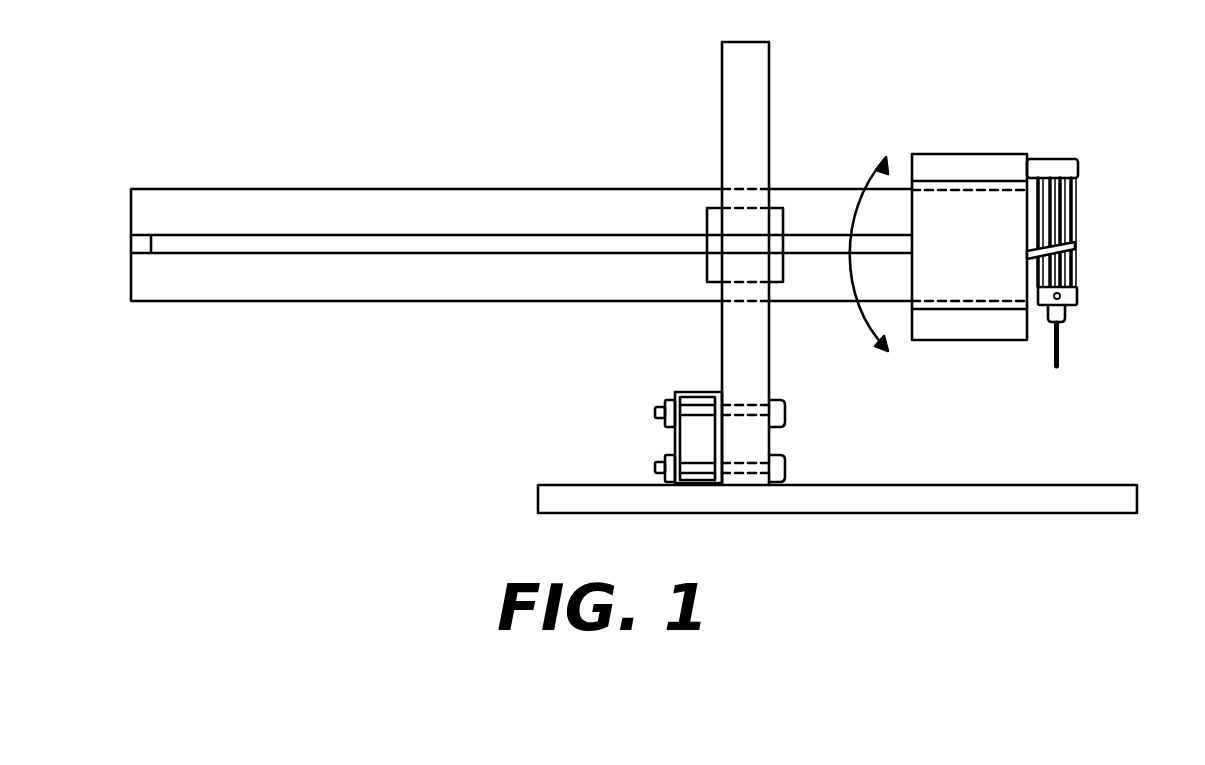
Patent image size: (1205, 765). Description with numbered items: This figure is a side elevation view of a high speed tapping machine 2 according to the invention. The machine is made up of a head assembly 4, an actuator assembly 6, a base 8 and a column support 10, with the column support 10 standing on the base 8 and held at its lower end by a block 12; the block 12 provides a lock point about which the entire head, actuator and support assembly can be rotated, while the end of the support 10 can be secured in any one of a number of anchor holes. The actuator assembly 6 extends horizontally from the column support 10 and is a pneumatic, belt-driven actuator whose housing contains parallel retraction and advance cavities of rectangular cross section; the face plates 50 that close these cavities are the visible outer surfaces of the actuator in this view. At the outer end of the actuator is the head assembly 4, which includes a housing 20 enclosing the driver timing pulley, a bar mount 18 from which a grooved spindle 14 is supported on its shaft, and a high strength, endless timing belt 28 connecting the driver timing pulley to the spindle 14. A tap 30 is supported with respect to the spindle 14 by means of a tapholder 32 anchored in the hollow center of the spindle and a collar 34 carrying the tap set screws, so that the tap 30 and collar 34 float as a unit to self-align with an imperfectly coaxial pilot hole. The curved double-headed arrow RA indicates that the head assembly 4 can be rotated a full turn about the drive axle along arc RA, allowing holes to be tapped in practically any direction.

The high speed tapping machine 2 is at (248, 413).
The head assembly 4 is at (1092, 138).
The actuator assembly 6 is at (579, 213).
The base 8 is at (1130, 497).
The column support 10 is at (760, 52).
The block 12 is at (677, 392).
The spindle 14 is at (1078, 215).
The bar mount 18 is at (1078, 170).
The housing 20 is at (975, 236).
The timing belt 28 is at (1078, 243).
The tap 30 is at (1063, 352).
The tapholder 32 is at (1068, 313).
The collar 34 is at (1078, 293).
The face plates 50 is at (310, 226).
The arc RA is at (862, 190).